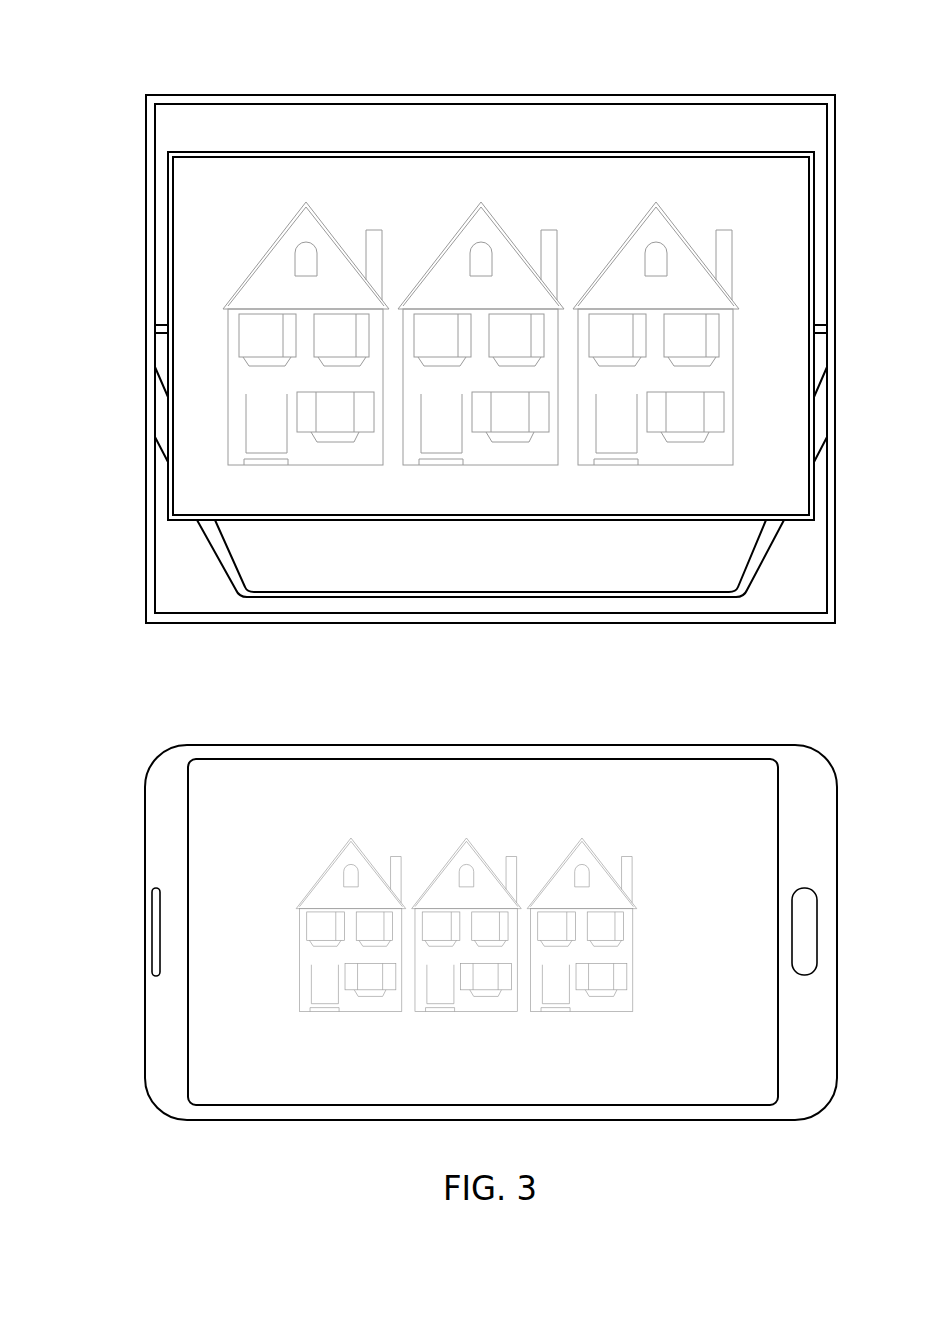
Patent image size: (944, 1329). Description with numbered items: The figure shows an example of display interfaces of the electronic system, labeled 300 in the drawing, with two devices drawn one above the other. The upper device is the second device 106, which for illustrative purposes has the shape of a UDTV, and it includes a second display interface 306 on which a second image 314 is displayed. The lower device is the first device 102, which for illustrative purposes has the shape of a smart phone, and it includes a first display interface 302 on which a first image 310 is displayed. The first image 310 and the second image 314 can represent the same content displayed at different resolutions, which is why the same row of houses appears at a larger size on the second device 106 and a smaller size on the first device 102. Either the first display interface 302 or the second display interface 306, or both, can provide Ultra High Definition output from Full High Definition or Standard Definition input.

The system environment 300 is at (161, 32).
The second device 106 is at (286, 83).
The second image 314 is at (182, 247).
The second display interface 306 is at (788, 493).
The first device 102 is at (280, 727).
The first image 310 is at (215, 872).
The first display interface 302 is at (734, 1065).